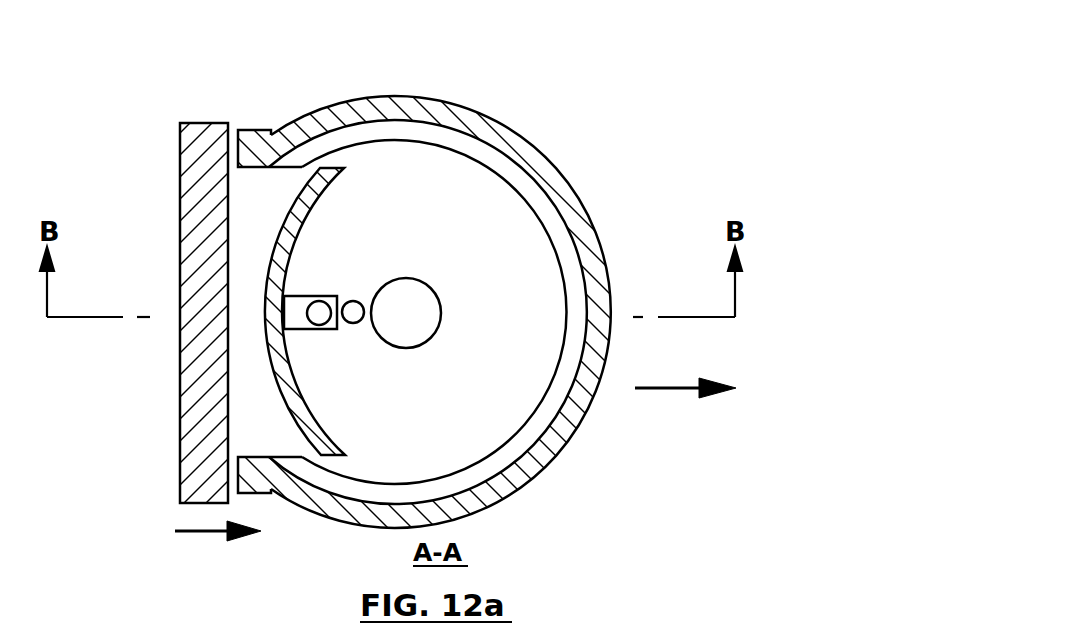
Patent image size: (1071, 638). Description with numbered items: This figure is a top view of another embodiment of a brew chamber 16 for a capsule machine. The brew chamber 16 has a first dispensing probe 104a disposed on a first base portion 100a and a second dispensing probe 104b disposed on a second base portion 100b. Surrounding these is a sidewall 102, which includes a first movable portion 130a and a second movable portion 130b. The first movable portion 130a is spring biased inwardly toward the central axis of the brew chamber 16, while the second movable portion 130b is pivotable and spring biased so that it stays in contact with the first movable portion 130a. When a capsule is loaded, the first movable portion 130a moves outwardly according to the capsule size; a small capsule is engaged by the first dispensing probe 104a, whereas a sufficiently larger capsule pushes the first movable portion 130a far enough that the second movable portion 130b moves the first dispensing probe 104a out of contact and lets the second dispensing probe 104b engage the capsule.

The brew chamber 16 is at (662, 127).
The first base portion 100a is at (318, 300).
The second base portion 100b is at (438, 223).
The sidewall 102 is at (606, 433).
The first dispensing probe 104a is at (302, 303).
The second dispensing probe 104b is at (353, 300).
The first movable portion 130a is at (583, 230).
The second movable portion 130b is at (302, 408).